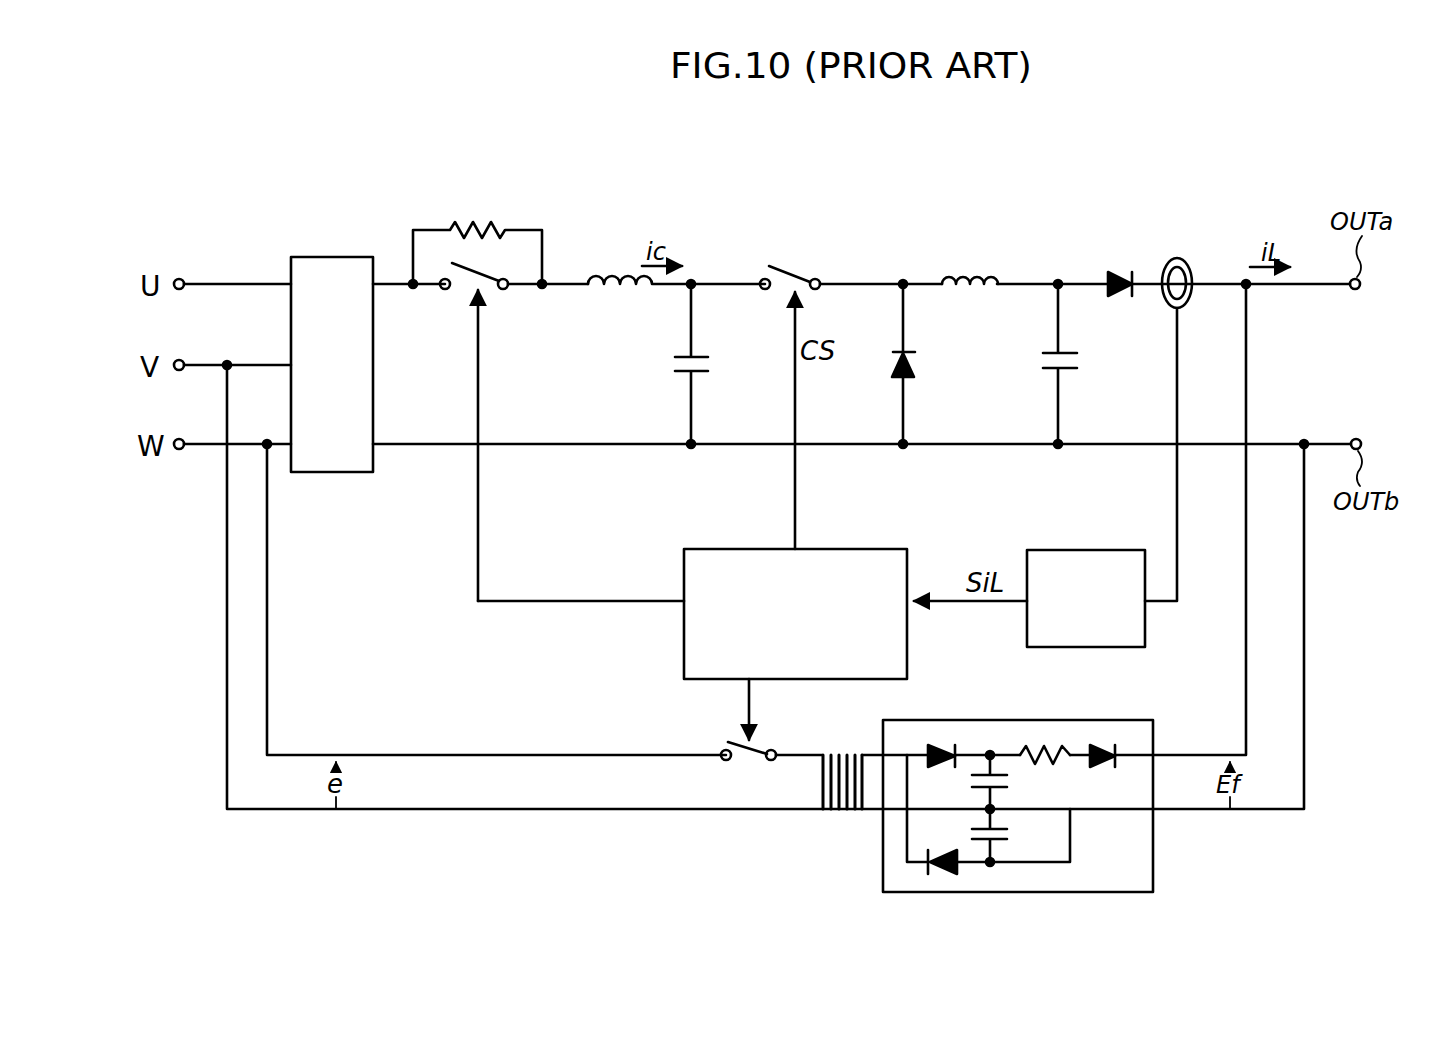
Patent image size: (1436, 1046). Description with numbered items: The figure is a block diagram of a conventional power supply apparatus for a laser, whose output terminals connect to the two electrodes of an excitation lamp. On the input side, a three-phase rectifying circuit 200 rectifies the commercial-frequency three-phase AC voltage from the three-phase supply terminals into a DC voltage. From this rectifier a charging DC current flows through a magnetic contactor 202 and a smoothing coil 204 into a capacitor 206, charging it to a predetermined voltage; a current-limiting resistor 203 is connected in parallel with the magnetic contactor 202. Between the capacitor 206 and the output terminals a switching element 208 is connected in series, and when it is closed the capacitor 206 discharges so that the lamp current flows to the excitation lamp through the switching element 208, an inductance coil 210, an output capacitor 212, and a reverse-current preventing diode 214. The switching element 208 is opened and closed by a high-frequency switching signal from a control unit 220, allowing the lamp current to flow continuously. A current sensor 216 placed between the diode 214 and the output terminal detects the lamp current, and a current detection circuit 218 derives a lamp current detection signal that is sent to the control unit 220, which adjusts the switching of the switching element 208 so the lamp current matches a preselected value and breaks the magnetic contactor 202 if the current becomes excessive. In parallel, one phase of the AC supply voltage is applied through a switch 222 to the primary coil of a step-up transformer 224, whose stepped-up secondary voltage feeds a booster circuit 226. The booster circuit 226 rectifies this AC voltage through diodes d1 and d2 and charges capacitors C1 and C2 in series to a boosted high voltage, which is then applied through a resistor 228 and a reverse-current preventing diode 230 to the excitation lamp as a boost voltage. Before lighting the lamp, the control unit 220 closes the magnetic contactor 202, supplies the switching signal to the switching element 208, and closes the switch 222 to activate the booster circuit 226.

The three-phase rectifying circuit 200 is at (331, 257).
The magnetic contactor 202 is at (497, 292).
The resistor 203 is at (477, 225).
The smoothing coil 204 is at (604, 268).
The capacitor 206 is at (675, 362).
The switching element 208 is at (788, 266).
The inductance coil 210 is at (975, 262).
The output capacitor 212 is at (1080, 360).
The reverse-current preventing diode 214 is at (1118, 268).
The current sensor 216 is at (1191, 260).
The current detection circuit 218 is at (1090, 550).
The control unit 220 is at (878, 549).
The switch 222 is at (714, 738).
The step-up transformer 224 is at (840, 813).
The booster circuit 226 is at (1049, 786).
The resistor 228 is at (1048, 748).
The reverse-current preventing diode 230 is at (1104, 748).
The diode d1 is at (944, 745).
The diode d2 is at (922, 868).
The capacitor C1 is at (1010, 781).
The capacitor C2 is at (1010, 834).